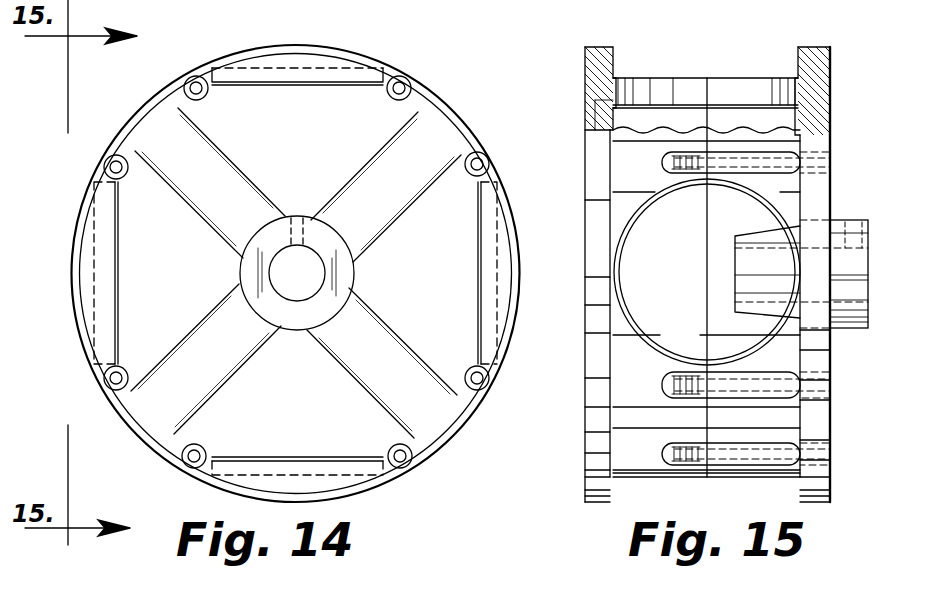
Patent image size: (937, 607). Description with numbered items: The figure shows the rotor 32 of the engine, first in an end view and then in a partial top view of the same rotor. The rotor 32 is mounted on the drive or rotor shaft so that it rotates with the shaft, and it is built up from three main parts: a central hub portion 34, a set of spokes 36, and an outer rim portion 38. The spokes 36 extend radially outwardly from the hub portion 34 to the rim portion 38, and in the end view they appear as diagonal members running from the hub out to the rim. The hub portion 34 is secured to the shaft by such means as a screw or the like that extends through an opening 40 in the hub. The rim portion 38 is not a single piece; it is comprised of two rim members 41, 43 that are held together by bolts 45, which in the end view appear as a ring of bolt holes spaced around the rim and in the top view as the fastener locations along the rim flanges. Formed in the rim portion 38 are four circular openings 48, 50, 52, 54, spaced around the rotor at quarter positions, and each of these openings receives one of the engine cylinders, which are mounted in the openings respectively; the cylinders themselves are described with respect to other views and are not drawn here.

In FIG. 14, the rotor 32 is at (478, 129).
In FIG. 15, the rotor 32 is at (855, 78).
In FIG. 14, the hub portion 34 is at (242, 274).
In FIG. 15, the hub portion 34 is at (848, 326).
In FIG. 14, the spokes 36 is at (349, 182).
In FIG. 15, the spokes 36 is at (814, 128).
In FIG. 14, the rim portion 38 is at (371, 55).
In FIG. 15, the rim portion 38 is at (829, 47).
In FIG. 14, the opening 40 is at (297, 216).
In FIG. 15, the opening 40 is at (848, 222).
In FIG. 15, the rim member 41 is at (800, 52).
In FIG. 15, the rim member 43 is at (614, 52).
In FIG. 14, the bolts 45 is at (190, 82).
In FIG. 15, the bolts 45 is at (794, 161).
In FIG. 14, the circular opening 48 is at (217, 72).
In FIG. 15, the circular opening 48 is at (626, 85).
In FIG. 14, the circular opening 50 is at (498, 196).
In FIG. 15, the circular opening 50 is at (625, 318).
In FIG. 14, the circular opening 52 is at (382, 491).
In FIG. 14, the circular opening 54 is at (100, 366).